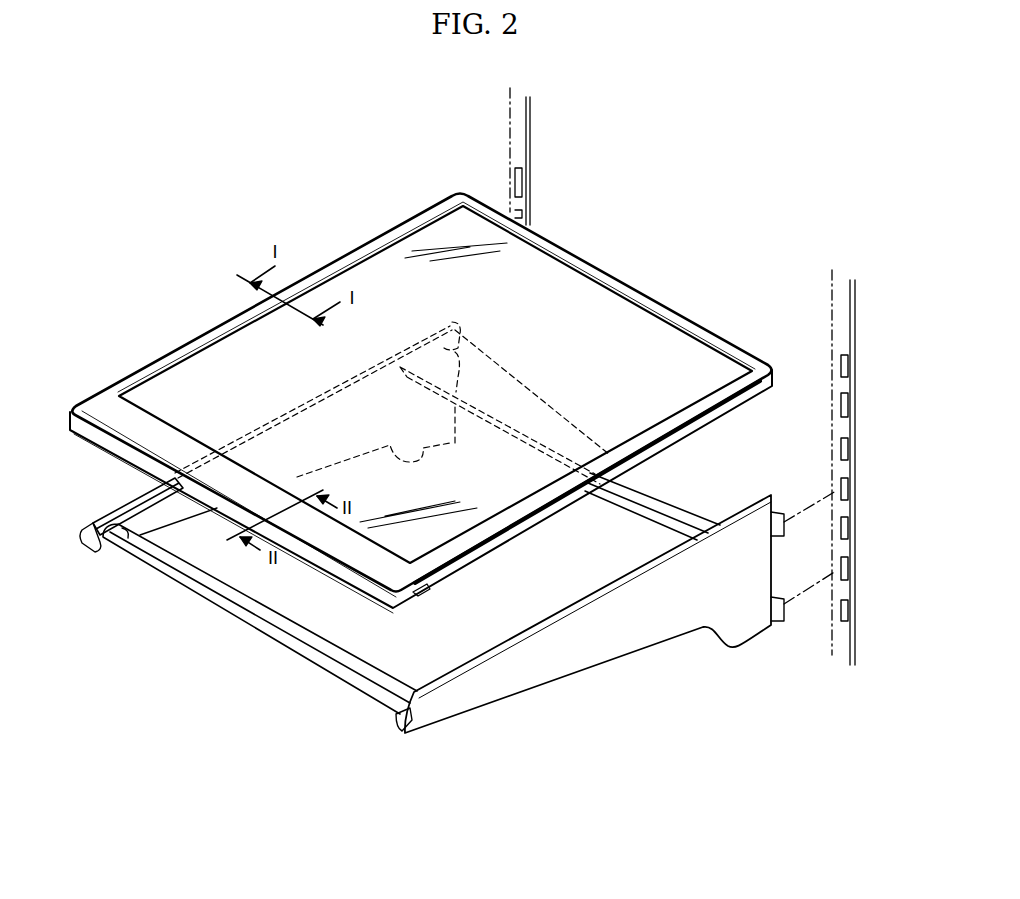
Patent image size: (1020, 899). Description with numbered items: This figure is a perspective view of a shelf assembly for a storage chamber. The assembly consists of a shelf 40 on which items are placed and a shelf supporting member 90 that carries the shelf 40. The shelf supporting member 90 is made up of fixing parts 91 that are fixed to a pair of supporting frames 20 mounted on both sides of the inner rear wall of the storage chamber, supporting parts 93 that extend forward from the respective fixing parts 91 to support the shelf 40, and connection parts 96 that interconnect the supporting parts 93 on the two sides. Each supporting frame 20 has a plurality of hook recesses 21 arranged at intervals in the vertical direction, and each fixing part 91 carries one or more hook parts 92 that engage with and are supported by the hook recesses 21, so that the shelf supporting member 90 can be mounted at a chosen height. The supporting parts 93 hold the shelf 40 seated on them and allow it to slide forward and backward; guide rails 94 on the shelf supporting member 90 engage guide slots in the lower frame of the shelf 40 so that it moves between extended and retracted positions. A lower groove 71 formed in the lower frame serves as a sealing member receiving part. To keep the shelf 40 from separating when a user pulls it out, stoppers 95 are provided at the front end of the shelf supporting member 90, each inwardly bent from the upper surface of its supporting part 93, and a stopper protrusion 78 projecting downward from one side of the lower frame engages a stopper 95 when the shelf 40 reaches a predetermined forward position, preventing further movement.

The supporting frame 20 is at (510, 133).
The hook recess 21 is at (515, 178).
The shelf 40 is at (138, 362).
The lower groove 71 is at (522, 537).
The stopper protrusion 78 is at (593, 496).
The shelf supporting member 90 is at (446, 606).
The fixing part 91 is at (752, 623).
The hook part 92 is at (782, 520).
The supporting part 93 is at (160, 518).
The guide rail 94 is at (128, 540).
The stopper 95 is at (90, 530).
The connection part 96 is at (333, 655).